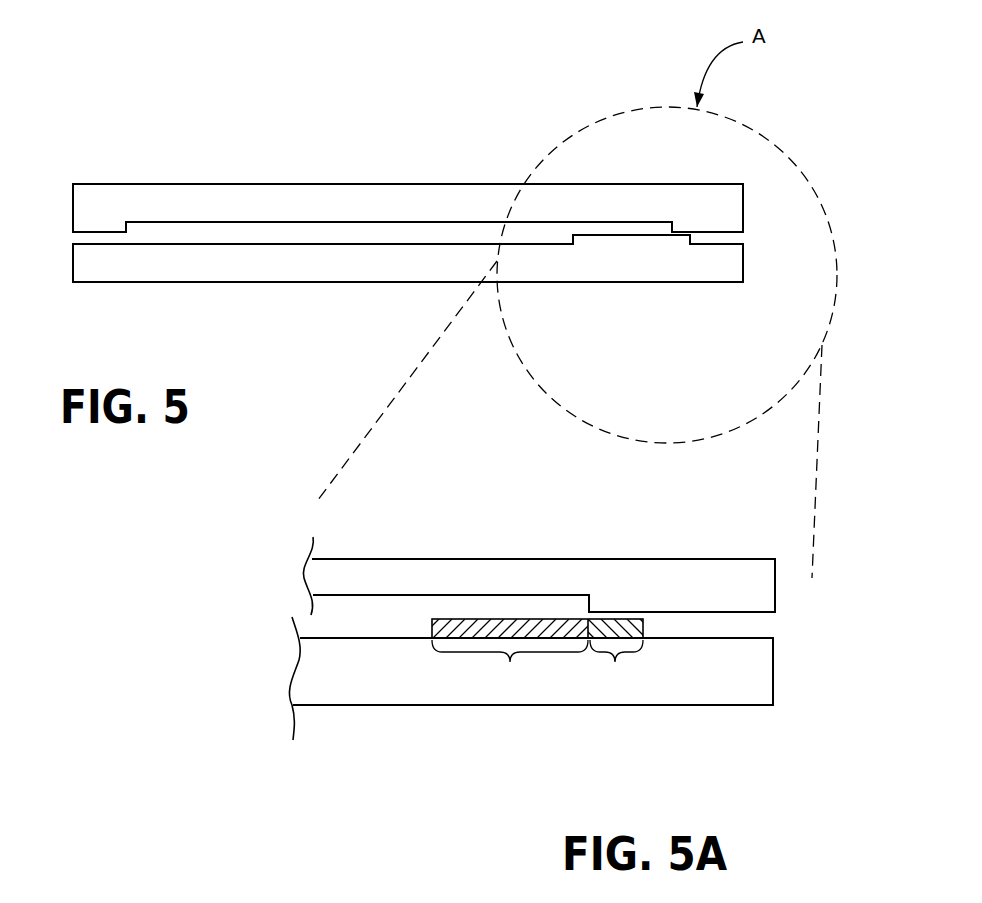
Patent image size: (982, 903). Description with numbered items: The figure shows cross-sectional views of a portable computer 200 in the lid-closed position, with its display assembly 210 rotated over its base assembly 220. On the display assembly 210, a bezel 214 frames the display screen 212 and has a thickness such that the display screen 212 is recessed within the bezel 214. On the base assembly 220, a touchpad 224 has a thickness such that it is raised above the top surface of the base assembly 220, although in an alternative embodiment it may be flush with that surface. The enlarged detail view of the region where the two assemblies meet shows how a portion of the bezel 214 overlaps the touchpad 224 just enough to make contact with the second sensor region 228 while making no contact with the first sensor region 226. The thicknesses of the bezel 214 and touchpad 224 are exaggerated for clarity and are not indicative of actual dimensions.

In FIG. 5, the portable computer 200 is at (228, 63).
In FIG. 5, the display assembly 210 is at (107, 200).
In FIG. 5, the display screen 212 is at (330, 222).
In FIG. 5A, the display screen 212 is at (345, 597).
In FIG. 5, the bezel 214 is at (708, 232).
In FIG. 5A, the bezel 214 is at (753, 600).
In FIG. 5, the base assembly 220 is at (92, 259).
In FIG. 5, the touchpad 224 is at (672, 237).
In FIG. 5A, the touchpad 224 is at (643, 628).
In FIG. 5A, the first sensor region 226 is at (510, 662).
In FIG. 5A, the second sensor region 228 is at (615, 662).